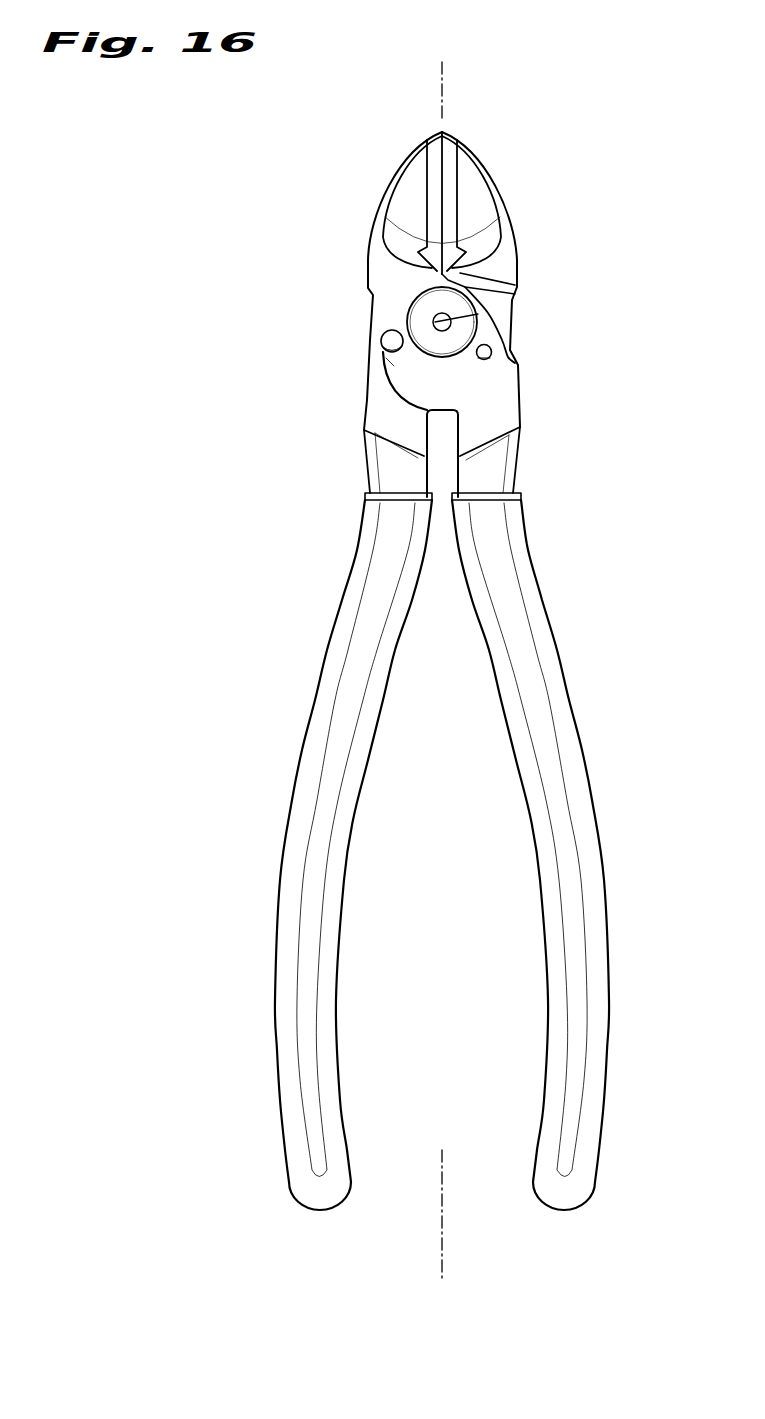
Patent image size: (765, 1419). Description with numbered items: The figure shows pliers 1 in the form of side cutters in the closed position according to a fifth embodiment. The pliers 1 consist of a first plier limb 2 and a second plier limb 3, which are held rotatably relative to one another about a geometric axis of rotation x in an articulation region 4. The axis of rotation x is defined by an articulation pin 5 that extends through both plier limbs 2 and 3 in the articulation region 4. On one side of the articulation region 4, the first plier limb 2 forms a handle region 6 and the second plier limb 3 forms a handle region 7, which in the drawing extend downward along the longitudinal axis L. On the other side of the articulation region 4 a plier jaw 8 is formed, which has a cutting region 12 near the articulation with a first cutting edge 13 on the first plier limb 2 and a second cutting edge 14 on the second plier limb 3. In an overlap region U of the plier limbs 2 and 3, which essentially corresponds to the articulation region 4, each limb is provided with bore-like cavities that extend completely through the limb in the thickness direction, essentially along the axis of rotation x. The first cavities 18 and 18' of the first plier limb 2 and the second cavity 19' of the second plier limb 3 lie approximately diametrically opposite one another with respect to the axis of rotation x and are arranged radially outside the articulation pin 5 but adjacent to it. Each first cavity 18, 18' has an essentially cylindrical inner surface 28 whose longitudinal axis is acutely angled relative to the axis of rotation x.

The pliers 1 is at (503, 105).
The first plier limb 2 is at (588, 800).
The second plier limb 3 is at (300, 800).
The articulation region 4 is at (405, 284).
The articulation pin 5 is at (408, 312).
The handle region 6 is at (540, 722).
The handle region 7 is at (330, 725).
The plier jaw 8 is at (378, 167).
The cutting region 12 is at (463, 168).
The first cutting edge 13 is at (457, 205).
The second cutting edge 14 is at (427, 207).
The first cavity 18 is at (539, 388).
The first cavity 18' is at (343, 396).
The second cavity 19' is at (347, 348).
The cylindrical inner surface 28 is at (386, 353).
The overlap region U is at (428, 372).
The axis of rotation x is at (478, 314).
The longitudinal axis L is at (443, 674).